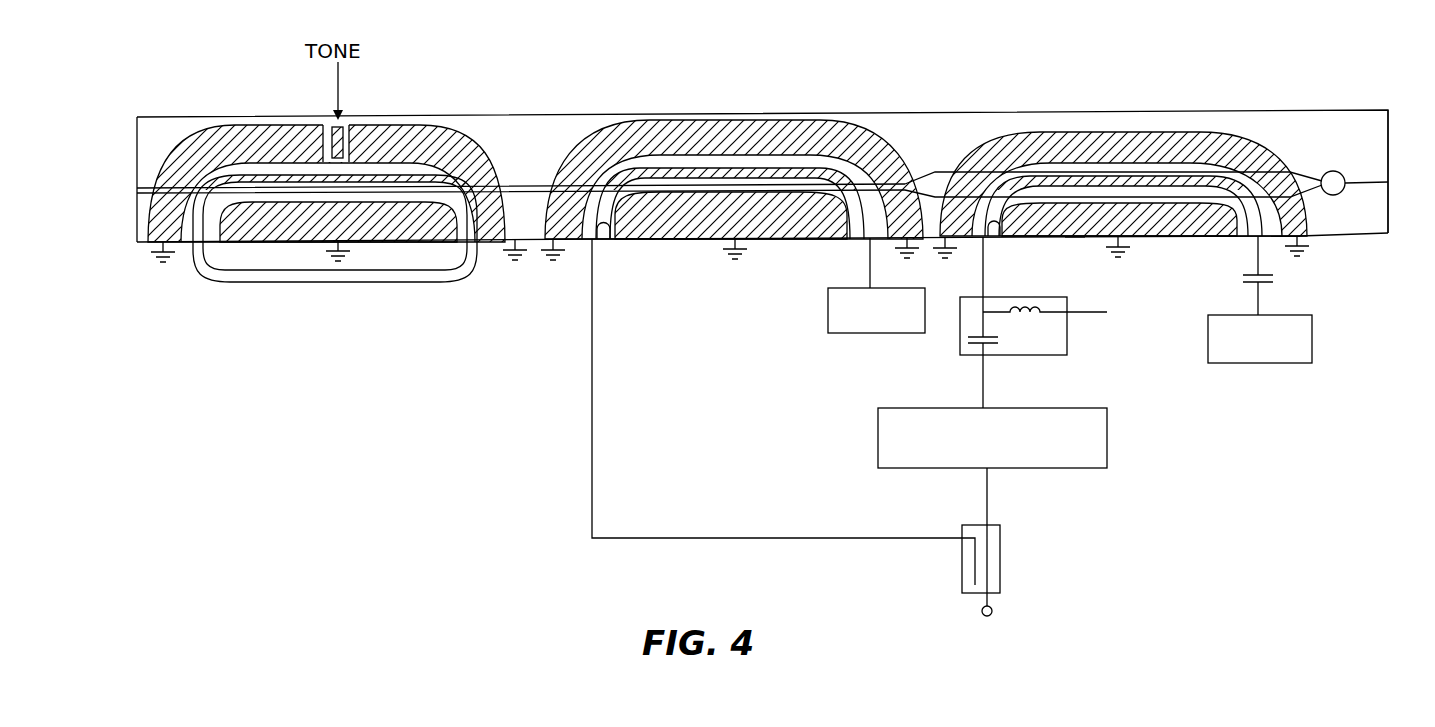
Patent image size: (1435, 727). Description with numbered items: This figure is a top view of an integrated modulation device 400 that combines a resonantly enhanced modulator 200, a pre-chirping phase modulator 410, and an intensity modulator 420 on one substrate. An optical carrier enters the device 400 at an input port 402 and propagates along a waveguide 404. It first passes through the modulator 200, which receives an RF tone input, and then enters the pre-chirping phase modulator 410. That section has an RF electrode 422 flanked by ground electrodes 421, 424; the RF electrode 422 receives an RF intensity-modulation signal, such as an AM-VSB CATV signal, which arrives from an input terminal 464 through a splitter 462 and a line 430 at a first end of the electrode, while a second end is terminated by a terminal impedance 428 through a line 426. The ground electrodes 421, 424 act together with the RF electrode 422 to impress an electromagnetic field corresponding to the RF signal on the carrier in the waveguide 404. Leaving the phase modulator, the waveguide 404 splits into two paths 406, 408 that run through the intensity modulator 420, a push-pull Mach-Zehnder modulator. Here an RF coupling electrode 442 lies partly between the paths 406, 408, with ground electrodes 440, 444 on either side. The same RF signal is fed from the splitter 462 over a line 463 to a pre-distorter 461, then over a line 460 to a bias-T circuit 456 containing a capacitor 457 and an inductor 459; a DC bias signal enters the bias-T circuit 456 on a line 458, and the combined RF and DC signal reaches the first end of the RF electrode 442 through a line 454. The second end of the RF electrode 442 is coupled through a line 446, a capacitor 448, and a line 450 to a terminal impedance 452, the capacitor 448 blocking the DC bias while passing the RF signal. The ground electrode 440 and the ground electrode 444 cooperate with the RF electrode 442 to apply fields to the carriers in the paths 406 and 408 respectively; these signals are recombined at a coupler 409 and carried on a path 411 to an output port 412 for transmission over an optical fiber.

The integrated modulation device 400 is at (105, 112).
The resonantly enhanced modulator 200 is at (239, 103).
The input port 402 is at (137, 200).
The waveguide 404 is at (150, 117).
The path 406 is at (1337, 170).
The path 408 is at (1330, 195).
The coupler 409 is at (1391, 130).
The pre-chirping phase modulator 410 is at (540, 135).
The path 411 is at (1374, 234).
The output port 412 is at (1389, 236).
The intensity modulator 420 is at (1123, 129).
The ground electrode 421 is at (888, 150).
The RF electrode 422 is at (599, 243).
The ground electrode 424 is at (686, 240).
The line 426 is at (869, 263).
The terminal impedance 428 is at (827, 311).
The line 430 is at (748, 540).
The ground electrode 440 is at (1242, 148).
The RF coupling electrode 442 is at (998, 240).
The ground electrode 444 is at (1075, 240).
The line 446 is at (1257, 262).
The capacitor 448 is at (1275, 282).
The line 450 is at (1260, 300).
The terminal impedance 452 is at (1313, 340).
The line 454 is at (984, 286).
The bias-T circuit 456 is at (1002, 346).
The capacitor 457 is at (967, 345).
The line 458 is at (1090, 316).
The inductor 459 is at (1043, 313).
The line 460 is at (984, 365).
The pre-distorter 461 is at (1108, 448).
The splitter 462 is at (1001, 565).
The line 463 is at (990, 497).
The input terminal 464 is at (994, 610).